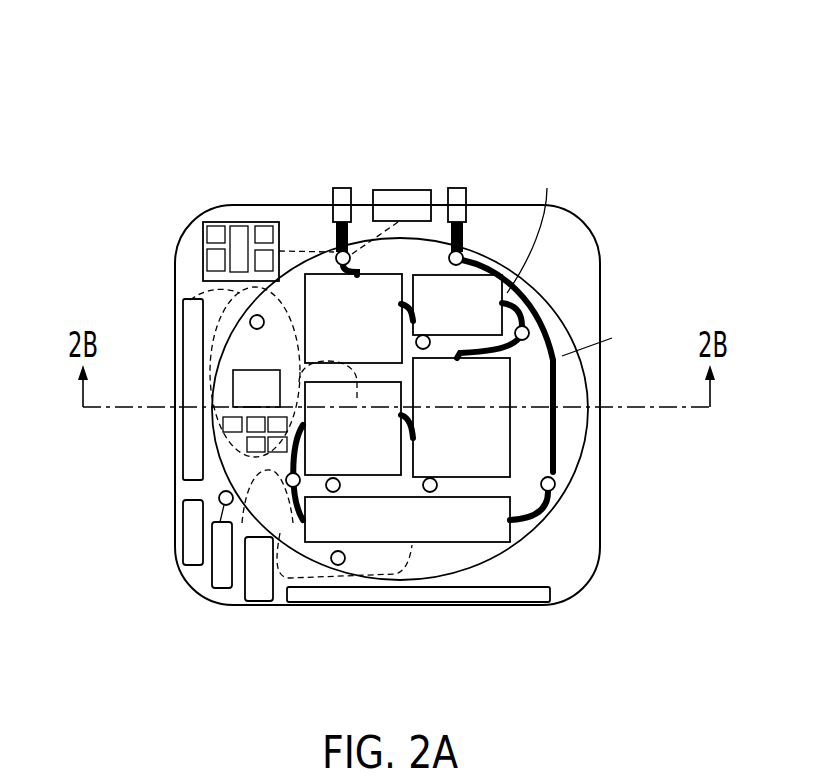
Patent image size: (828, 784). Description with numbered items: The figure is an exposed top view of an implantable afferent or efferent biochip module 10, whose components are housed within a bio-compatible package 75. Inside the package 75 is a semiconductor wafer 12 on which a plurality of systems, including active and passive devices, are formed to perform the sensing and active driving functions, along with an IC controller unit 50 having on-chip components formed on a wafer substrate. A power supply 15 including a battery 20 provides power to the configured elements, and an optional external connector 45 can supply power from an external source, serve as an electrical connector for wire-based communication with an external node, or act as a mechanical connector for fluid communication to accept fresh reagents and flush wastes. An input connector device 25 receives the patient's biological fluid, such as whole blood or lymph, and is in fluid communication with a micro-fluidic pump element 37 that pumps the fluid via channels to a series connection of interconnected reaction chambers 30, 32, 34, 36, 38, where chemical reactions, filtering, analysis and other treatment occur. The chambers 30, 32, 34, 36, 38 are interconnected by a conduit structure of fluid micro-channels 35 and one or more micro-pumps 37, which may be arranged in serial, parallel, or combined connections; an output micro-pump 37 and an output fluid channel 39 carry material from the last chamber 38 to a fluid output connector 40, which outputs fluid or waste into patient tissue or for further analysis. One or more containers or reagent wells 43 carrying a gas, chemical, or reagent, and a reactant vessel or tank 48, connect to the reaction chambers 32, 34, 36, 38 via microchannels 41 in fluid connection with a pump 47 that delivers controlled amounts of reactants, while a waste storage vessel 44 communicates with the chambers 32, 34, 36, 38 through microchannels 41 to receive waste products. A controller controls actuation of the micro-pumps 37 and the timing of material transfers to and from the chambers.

The biochip module 10 is at (360, 75).
The wafer 12 is at (554, 287).
The power supply 15 is at (220, 217).
The battery 20 is at (170, 310).
The input connector device 25 is at (341, 180).
The reaction chamber 30 is at (342, 333).
The reaction chamber 32 is at (446, 319).
The reaction chamber 34 is at (342, 464).
The fluid micro-channels 35 is at (533, 227).
The reaction chamber 36 is at (450, 462).
The micro-fluidic pump element 37 is at (338, 252).
The reaction chamber 38 is at (397, 534).
The output fluid channel 39 is at (599, 338).
The fluid output connector 40 is at (457, 178).
The microchannel 41 is at (352, 370).
The reagent well 43 is at (215, 572).
The waste storage vessel 44 is at (265, 601).
The external connector 45 is at (405, 180).
The pump 47 is at (219, 497).
The reactant vessel 48 is at (377, 612).
The IC controller unit 50 is at (185, 386).
The bio-compatible package 75 is at (612, 372).